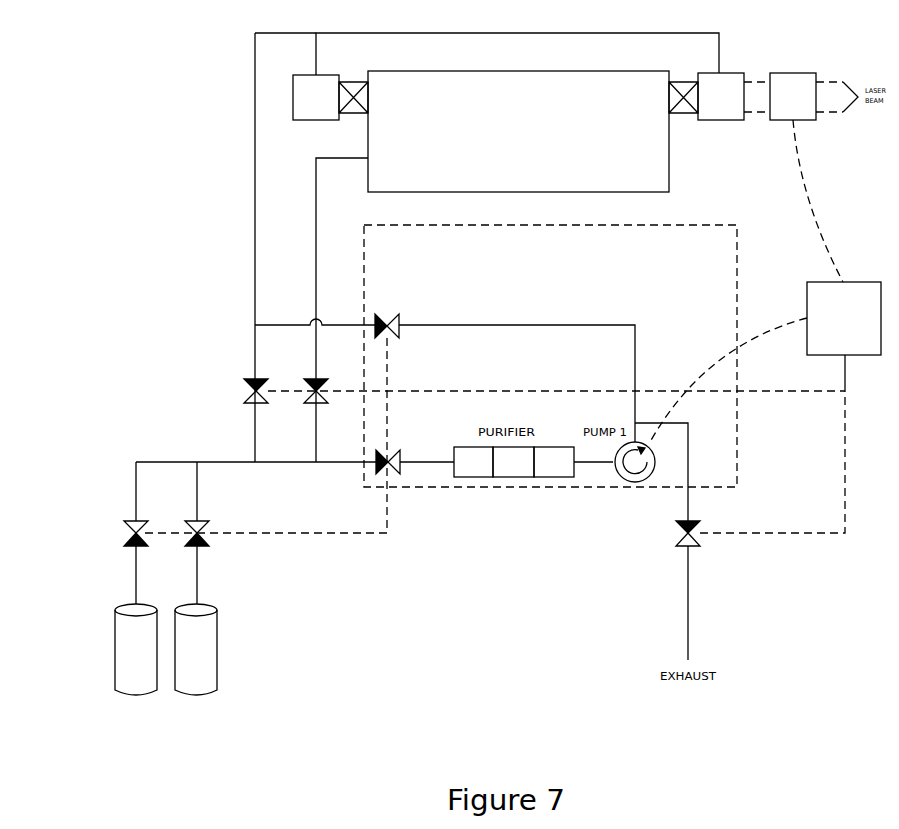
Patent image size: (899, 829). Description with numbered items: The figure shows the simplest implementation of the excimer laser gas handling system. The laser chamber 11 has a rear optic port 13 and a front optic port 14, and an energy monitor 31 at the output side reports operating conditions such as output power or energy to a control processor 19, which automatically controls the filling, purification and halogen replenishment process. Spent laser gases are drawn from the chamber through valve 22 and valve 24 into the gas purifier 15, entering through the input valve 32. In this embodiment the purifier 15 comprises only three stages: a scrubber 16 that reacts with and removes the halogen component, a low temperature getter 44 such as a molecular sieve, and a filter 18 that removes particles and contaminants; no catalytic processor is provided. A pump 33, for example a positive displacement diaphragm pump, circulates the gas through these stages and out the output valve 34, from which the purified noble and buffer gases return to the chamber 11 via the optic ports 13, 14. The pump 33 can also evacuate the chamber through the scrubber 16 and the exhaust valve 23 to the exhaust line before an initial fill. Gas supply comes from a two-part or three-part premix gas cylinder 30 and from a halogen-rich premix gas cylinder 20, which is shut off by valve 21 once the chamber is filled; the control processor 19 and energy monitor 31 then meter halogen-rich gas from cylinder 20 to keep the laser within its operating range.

The laser chamber 11 is at (644, 118).
The optic port 13 is at (293, 75).
The optic port 14 is at (698, 73).
The energy monitor 31 is at (770, 73).
The control processor 19 is at (866, 306).
The gas purifier 15 is at (391, 246).
The output valve 34 is at (399, 310).
The input valve 32 is at (400, 448).
The valve 24 is at (244, 384).
The valve 22 is at (304, 384).
The scrubber 16 is at (477, 470).
The low temperature getter 44 is at (517, 470).
The filter 18 is at (557, 472).
The pump 33 is at (635, 478).
The exhaust valve 23 is at (700, 524).
The valve 21 is at (203, 550).
The premix gas cylinder 30 is at (144, 682).
The halogen-rich premix gas cylinder 20 is at (204, 680).